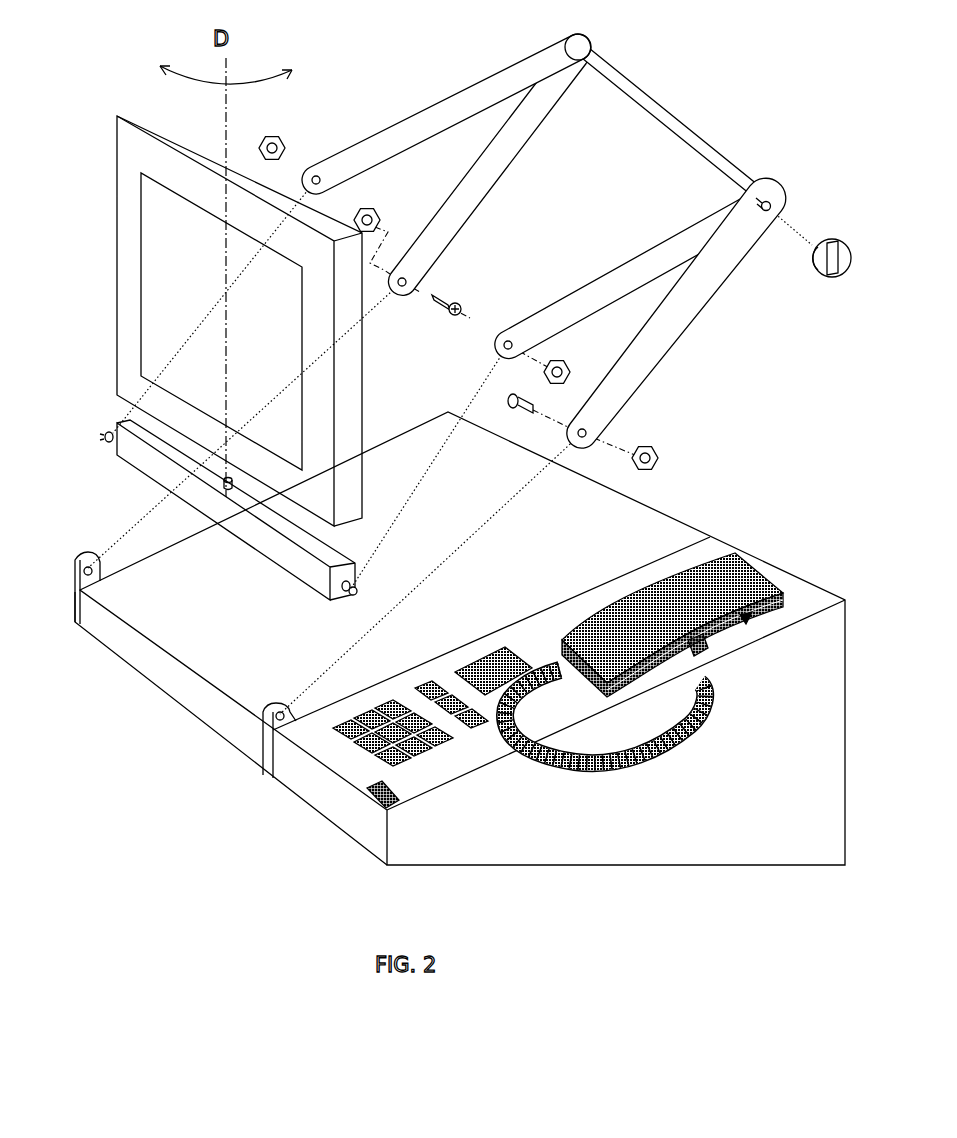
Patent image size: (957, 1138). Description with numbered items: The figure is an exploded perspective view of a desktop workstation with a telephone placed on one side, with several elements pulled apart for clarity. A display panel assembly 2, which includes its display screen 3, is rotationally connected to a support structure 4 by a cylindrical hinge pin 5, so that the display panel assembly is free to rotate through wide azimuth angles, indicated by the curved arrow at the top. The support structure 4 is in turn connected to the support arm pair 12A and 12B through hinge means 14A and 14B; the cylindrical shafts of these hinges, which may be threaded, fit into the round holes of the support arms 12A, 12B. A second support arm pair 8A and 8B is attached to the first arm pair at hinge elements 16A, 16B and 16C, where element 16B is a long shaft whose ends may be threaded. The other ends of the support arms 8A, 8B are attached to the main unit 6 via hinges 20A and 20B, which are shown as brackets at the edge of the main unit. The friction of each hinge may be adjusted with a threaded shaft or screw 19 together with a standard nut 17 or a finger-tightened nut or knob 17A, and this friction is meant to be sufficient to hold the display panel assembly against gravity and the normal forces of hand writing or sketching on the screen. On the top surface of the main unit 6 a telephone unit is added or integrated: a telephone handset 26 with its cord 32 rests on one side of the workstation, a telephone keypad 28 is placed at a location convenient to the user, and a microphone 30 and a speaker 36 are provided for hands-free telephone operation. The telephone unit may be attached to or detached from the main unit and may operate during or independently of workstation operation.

The display panel assembly 2 is at (125, 180).
The display screen 3 is at (175, 286).
The support structure 4 is at (255, 545).
The cylindrical hinge pin 5 is at (236, 486).
The main unit 6 is at (812, 723).
The support arm 8A is at (462, 208).
The support arm 8B is at (650, 352).
The support arm 12A is at (507, 88).
The support arm 12B is at (632, 266).
The hinge means 14A is at (107, 438).
The hinge means 14B is at (350, 600).
The hinge element 16A is at (778, 204).
The hinge element (long shaft) 16B is at (652, 118).
The hinge element 16C is at (578, 45).
The standard nut 17 is at (366, 206).
The finger tightened nut/knob 17A is at (834, 278).
The threaded shaft or screw 19 is at (506, 402).
The hinge 20A is at (78, 560).
The hinge 20B is at (272, 700).
The telephone handset 26 is at (740, 580).
The telephone keypad 28 is at (423, 745).
The microphone 30 is at (393, 811).
The cord 32 is at (660, 762).
The speaker 36 is at (485, 670).